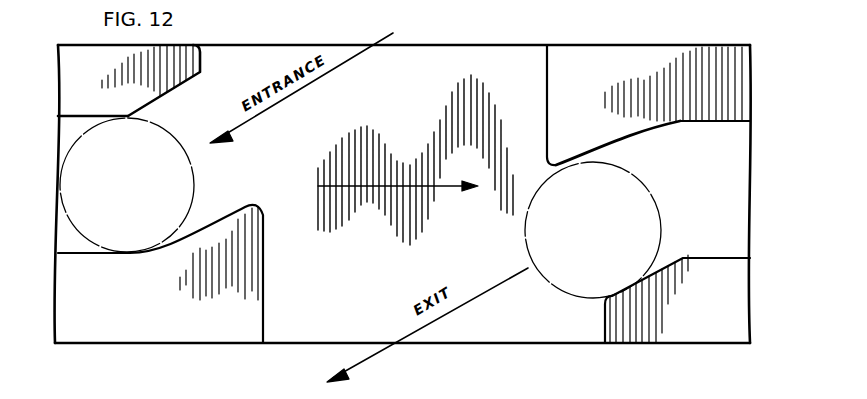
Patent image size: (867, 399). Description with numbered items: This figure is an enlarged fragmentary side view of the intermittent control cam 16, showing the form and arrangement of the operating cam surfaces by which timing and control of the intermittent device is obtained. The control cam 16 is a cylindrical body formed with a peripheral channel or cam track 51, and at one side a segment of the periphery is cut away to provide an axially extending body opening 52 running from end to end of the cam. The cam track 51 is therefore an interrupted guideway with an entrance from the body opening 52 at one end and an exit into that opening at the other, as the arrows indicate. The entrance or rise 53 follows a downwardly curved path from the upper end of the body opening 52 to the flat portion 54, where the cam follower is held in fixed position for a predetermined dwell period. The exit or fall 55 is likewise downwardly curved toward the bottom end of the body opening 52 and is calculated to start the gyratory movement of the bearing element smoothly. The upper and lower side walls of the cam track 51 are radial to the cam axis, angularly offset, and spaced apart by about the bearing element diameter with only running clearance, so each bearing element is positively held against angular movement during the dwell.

The intermittent control cam 16 is at (665, 55).
The cam track 51 is at (737, 235).
The body opening 52 is at (485, 55).
The entrance or rise 53 is at (173, 88).
The flat portion 54 is at (62, 118).
The exit or fall 55 is at (605, 145).